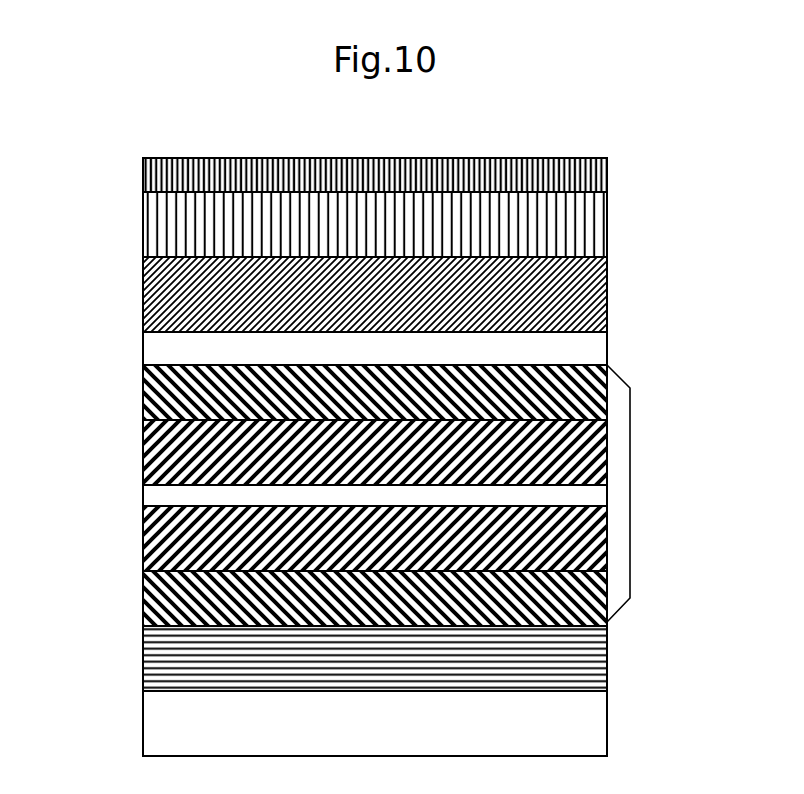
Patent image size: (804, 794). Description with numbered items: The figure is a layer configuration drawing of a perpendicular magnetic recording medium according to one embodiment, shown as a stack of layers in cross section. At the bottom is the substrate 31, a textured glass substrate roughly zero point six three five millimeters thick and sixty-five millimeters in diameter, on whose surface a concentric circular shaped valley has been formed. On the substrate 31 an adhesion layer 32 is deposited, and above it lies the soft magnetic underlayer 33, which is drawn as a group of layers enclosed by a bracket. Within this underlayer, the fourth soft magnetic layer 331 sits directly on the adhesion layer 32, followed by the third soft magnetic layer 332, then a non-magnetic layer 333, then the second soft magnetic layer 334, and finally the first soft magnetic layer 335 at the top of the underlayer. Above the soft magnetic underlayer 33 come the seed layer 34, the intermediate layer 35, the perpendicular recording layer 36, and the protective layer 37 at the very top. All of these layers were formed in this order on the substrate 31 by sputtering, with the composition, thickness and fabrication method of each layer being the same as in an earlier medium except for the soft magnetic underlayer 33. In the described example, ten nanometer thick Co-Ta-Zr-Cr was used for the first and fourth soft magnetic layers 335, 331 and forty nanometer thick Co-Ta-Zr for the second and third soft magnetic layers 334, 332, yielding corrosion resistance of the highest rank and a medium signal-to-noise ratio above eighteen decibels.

The substrate 31 is at (572, 733).
The adhesion layer 32 is at (572, 668).
The soft magnetic underlayer 33 is at (630, 505).
The fourth soft magnetic layer 331 is at (143, 588).
The third soft magnetic layer 332 is at (165, 547).
The non-magnetic layer 333 is at (163, 495).
The second soft magnetic layer 334 is at (163, 450).
The first soft magnetic layer 335 is at (143, 383).
The seed layer 34 is at (573, 353).
The intermediate layer 35 is at (575, 287).
The perpendicular recording layer 36 is at (583, 235).
The protective layer 37 is at (583, 182).